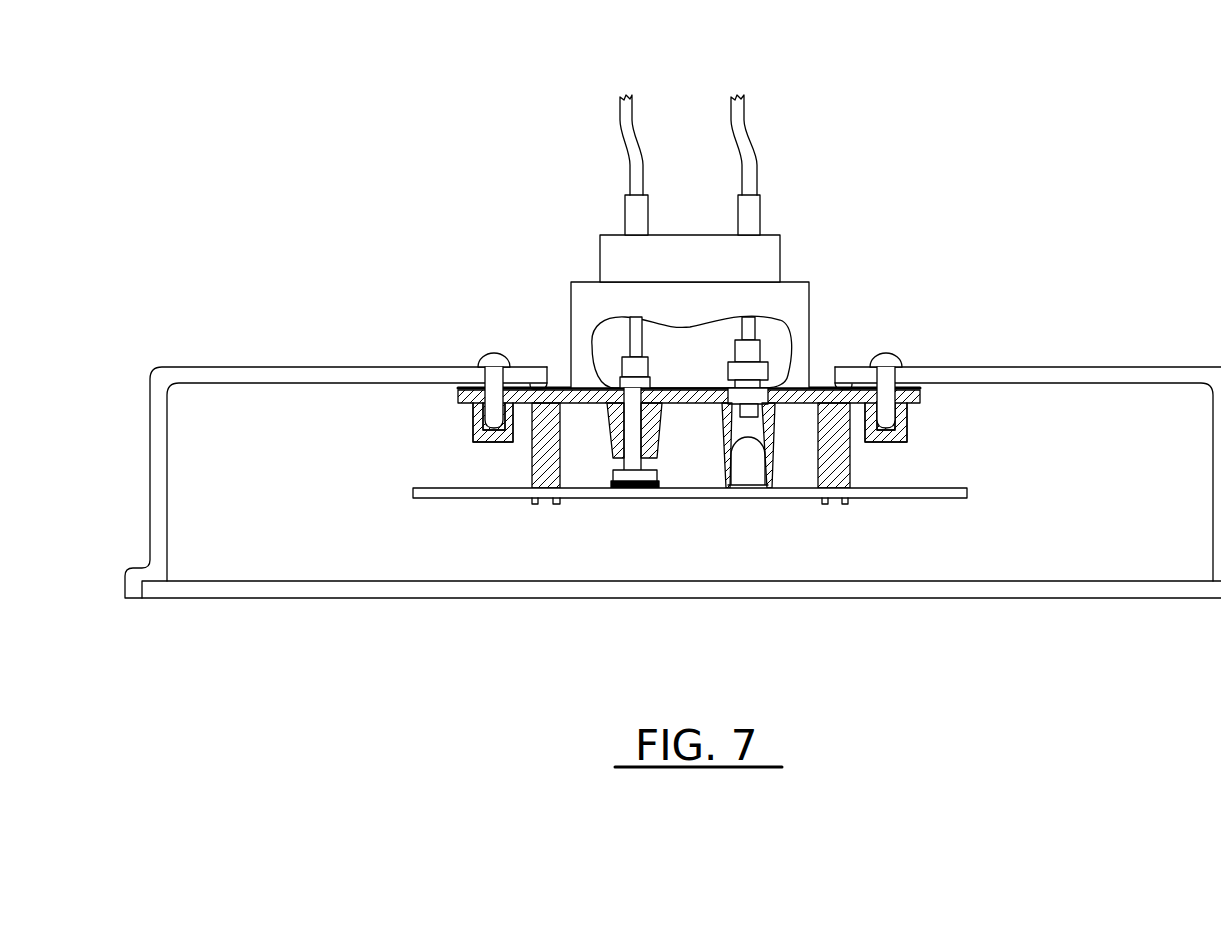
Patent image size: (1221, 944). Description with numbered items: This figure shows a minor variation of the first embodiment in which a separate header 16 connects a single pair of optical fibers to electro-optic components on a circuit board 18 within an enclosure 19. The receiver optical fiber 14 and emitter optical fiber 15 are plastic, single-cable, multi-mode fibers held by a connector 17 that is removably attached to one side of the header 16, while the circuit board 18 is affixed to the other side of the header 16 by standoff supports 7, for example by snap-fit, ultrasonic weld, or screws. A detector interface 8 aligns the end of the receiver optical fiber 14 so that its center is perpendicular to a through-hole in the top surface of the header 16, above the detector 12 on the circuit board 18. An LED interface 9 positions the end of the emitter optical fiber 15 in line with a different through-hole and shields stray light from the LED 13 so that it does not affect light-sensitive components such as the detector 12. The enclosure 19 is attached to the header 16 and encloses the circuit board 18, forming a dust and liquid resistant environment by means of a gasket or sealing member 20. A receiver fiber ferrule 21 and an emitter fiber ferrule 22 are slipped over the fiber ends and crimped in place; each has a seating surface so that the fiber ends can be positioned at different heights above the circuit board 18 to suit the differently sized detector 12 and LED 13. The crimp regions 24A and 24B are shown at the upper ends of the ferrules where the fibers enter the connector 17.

The standoff supports 7 is at (525, 458).
The detector interface 8 is at (608, 418).
The LED interface 9 is at (720, 450).
The detector 12 is at (640, 480).
The LED 13 is at (752, 484).
The receiver optical fiber 14 is at (613, 107).
The emitter optical fiber 15 is at (748, 126).
The header 16 is at (550, 385).
The connector 17 is at (812, 328).
The circuit board 18 is at (920, 498).
The enclosure 19 is at (1075, 366).
The sealing member 20 is at (843, 383).
The receiver fiber ferrule 21 is at (615, 358).
The emitter fiber ferrule 22 is at (760, 340).
The terminal sleeve 24A is at (623, 198).
The terminal sleeve 24B is at (765, 198).